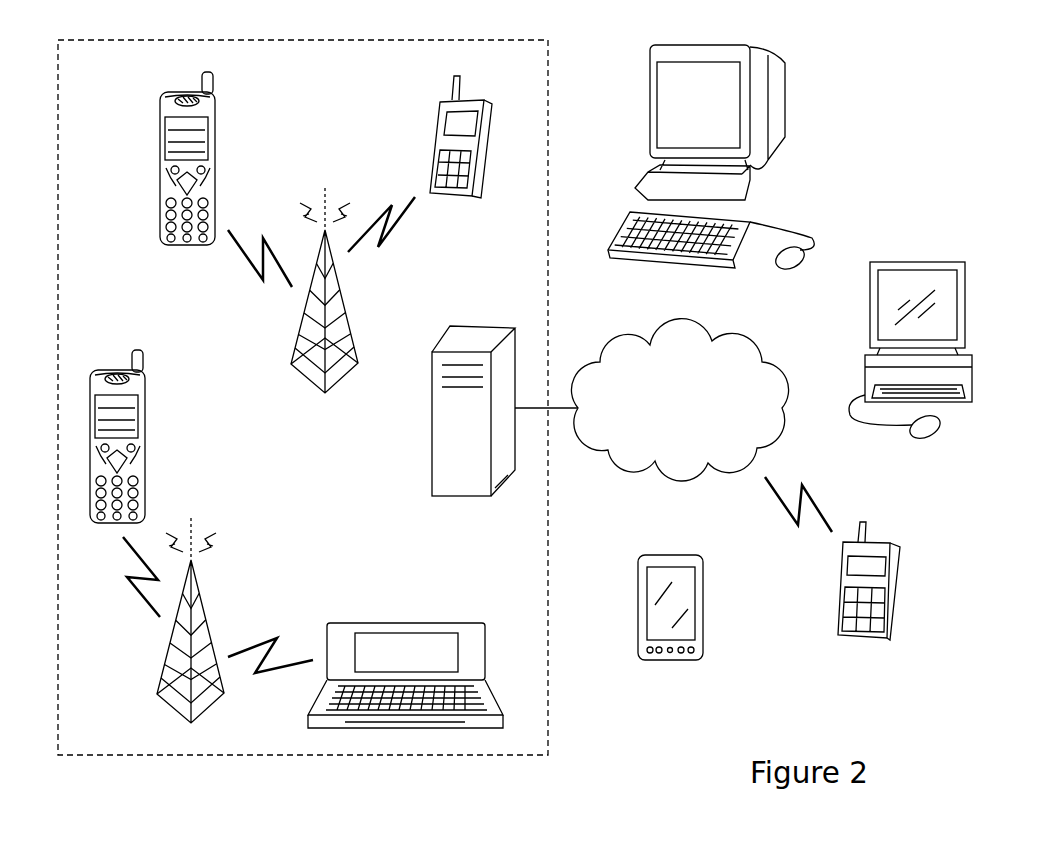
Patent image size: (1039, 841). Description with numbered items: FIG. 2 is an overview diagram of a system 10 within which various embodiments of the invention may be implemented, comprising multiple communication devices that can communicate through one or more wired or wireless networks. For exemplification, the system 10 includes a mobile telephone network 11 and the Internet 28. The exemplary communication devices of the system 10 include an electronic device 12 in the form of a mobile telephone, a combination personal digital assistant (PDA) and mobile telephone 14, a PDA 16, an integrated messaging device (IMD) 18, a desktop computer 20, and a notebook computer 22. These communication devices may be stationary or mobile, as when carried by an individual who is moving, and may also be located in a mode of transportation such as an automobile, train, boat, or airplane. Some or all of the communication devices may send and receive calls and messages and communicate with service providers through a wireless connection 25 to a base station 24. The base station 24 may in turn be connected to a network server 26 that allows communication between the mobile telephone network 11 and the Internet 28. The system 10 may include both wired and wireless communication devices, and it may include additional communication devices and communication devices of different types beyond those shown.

The system 10 is at (955, 504).
The mobile telephone network 11 is at (95, 78).
The electronic device 12 is at (215, 167).
The combination personal digital assistant and mobile telephone 14 is at (400, 626).
The PDA 16 is at (705, 603).
The integrated messaging device 18 is at (435, 147).
The desktop computer 20 is at (785, 100).
The notebook computer 22 is at (918, 262).
The base station 24 is at (340, 297).
The wireless connection 25 is at (140, 600).
The network server 26 is at (432, 425).
The Internet 28 is at (712, 341).